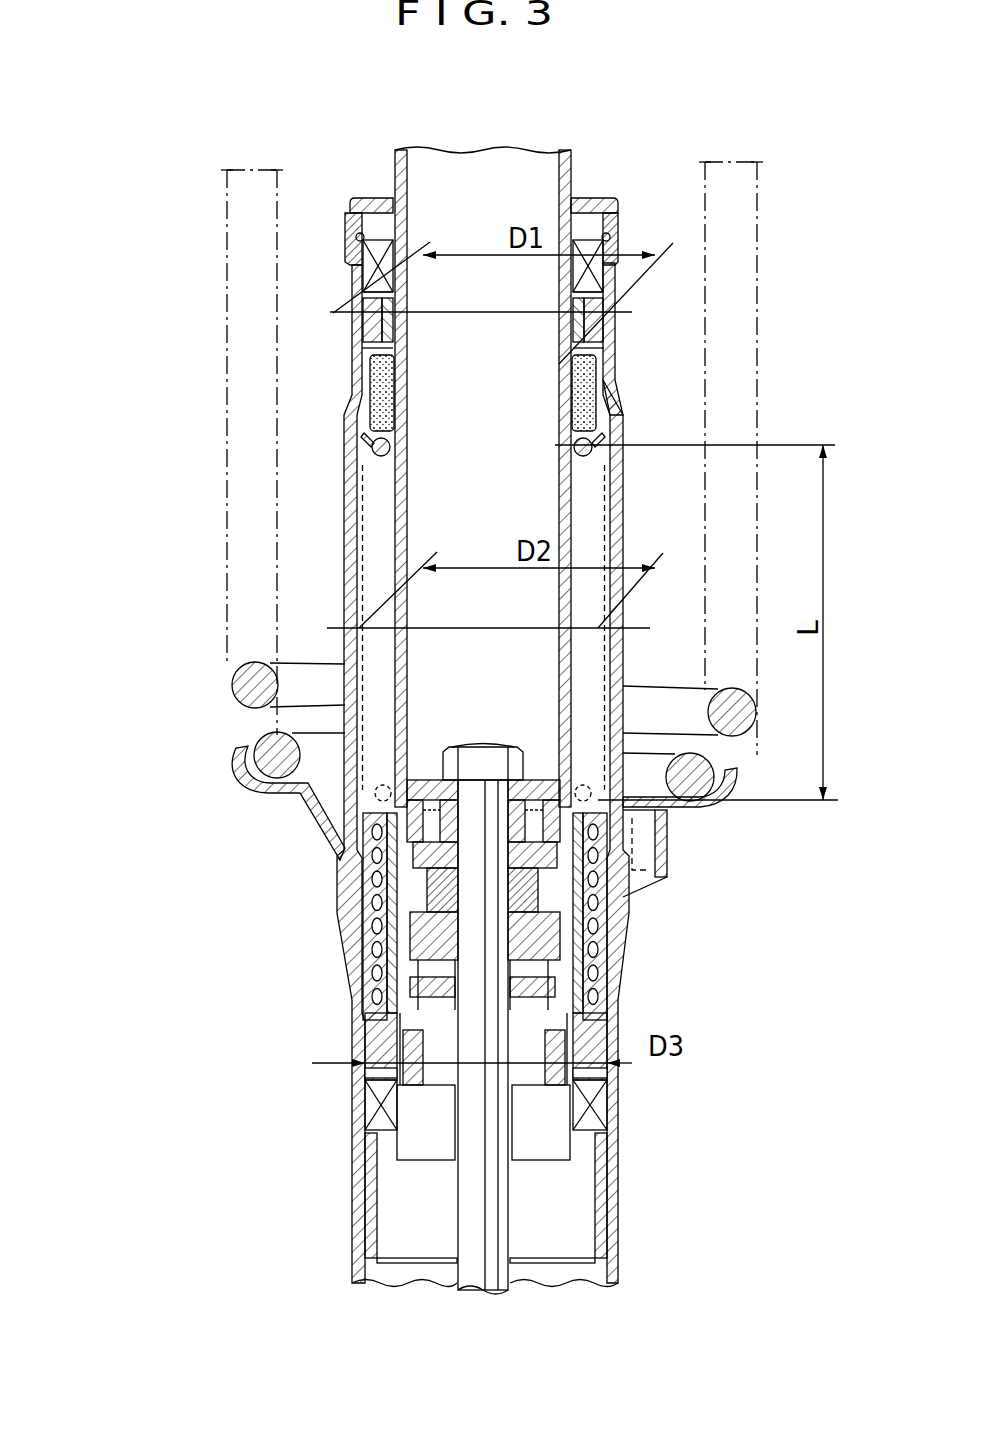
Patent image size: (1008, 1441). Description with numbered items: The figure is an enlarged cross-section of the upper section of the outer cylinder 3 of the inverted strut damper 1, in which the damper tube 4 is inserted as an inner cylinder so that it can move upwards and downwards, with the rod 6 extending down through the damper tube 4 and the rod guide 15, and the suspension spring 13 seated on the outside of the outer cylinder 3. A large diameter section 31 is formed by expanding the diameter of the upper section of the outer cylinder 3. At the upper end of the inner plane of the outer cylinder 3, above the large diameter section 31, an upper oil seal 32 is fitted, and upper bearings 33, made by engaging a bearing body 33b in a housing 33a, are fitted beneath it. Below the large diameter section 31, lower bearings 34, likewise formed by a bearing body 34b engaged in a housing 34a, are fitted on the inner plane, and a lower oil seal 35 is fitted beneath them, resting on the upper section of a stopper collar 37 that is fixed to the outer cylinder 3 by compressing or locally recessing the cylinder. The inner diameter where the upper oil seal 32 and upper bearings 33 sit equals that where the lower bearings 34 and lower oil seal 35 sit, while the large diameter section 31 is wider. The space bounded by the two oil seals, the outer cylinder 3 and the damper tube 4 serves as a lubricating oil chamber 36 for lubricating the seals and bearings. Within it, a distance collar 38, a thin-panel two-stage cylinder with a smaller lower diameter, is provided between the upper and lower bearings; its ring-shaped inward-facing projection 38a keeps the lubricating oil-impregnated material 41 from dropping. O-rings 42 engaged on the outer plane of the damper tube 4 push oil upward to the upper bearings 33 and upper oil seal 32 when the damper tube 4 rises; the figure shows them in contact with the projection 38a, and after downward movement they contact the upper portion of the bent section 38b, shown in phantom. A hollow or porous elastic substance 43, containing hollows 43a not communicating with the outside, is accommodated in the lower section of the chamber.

The inverted strut damper 1 is at (190, 345).
The outer cylinder 3 is at (345, 277).
The damper tube 4 is at (573, 175).
The rod 6 is at (510, 1222).
The suspension spring 13 is at (227, 530).
The rod guide 15 is at (545, 780).
The large diameter section 31 is at (348, 560).
The upper oil seal 32 is at (350, 252).
The upper bearings 33 is at (357, 330).
The housing 33a is at (362, 355).
The bearing body 33b is at (393, 330).
The lower bearings 34 is at (360, 1038).
The housing 34a is at (365, 1070).
The bearing body 34b is at (365, 1105).
The lower oil seal 35 is at (367, 1123).
The lubricating oil chamber 36 is at (377, 692).
The stopper collar 37 is at (367, 1200).
The distance collar 38 is at (337, 787).
The inward-facing projection 38a is at (623, 416).
The bent section 38b is at (632, 832).
The lubricating oil-impregnated material 41 is at (378, 398).
The O-rings 42 is at (372, 452).
The hollow or porous elastic substance 43 is at (372, 940).
The hollows 43a is at (600, 907).